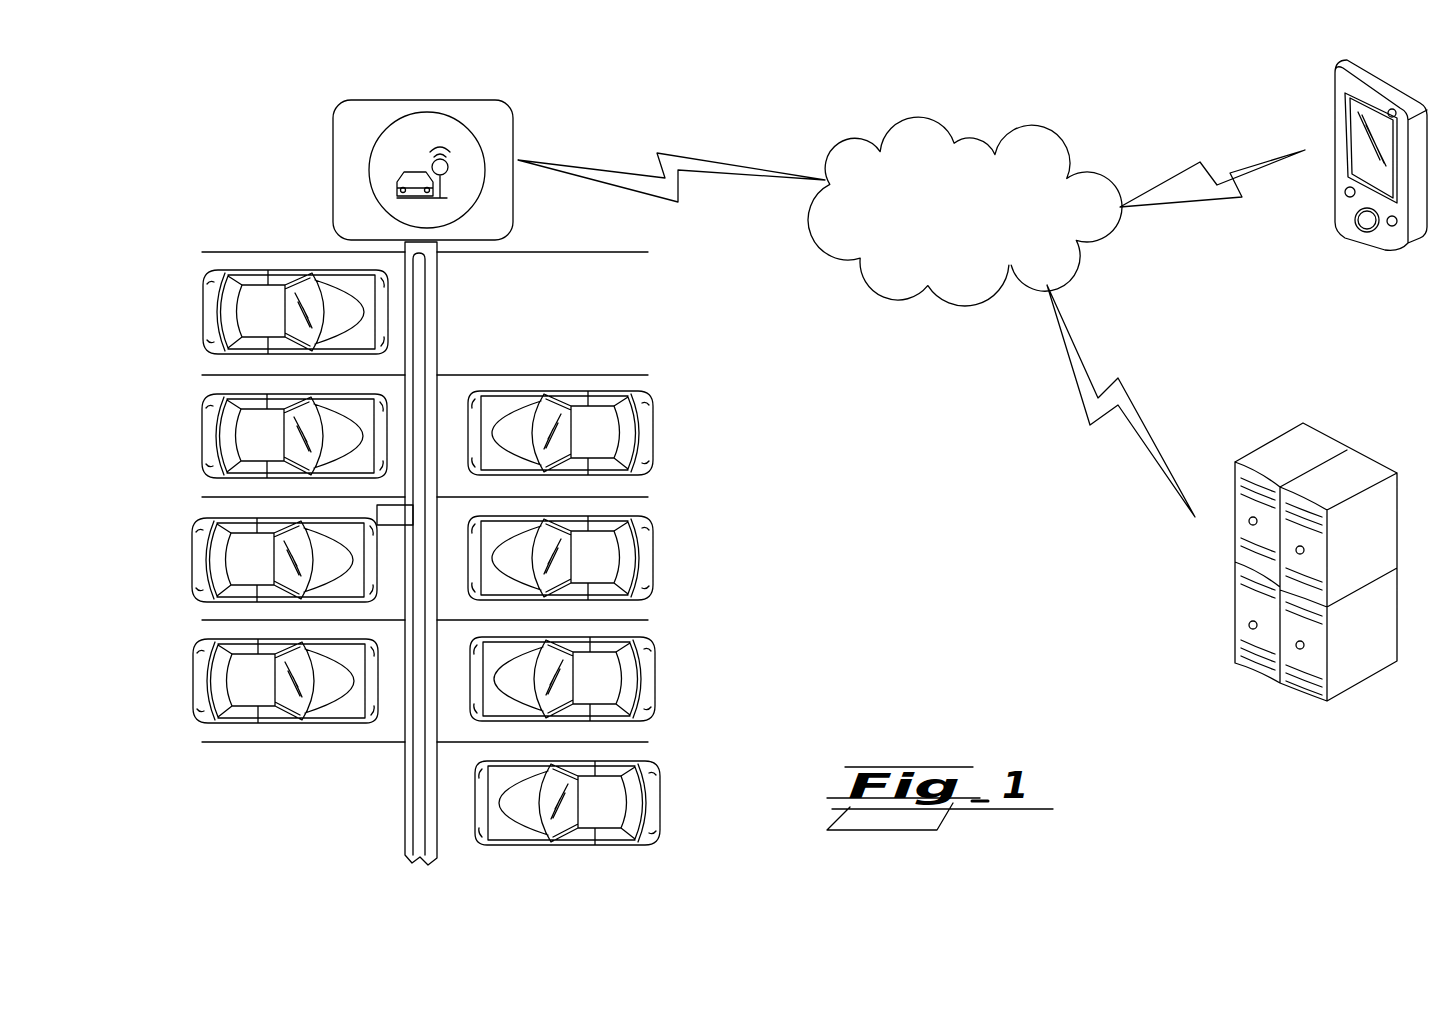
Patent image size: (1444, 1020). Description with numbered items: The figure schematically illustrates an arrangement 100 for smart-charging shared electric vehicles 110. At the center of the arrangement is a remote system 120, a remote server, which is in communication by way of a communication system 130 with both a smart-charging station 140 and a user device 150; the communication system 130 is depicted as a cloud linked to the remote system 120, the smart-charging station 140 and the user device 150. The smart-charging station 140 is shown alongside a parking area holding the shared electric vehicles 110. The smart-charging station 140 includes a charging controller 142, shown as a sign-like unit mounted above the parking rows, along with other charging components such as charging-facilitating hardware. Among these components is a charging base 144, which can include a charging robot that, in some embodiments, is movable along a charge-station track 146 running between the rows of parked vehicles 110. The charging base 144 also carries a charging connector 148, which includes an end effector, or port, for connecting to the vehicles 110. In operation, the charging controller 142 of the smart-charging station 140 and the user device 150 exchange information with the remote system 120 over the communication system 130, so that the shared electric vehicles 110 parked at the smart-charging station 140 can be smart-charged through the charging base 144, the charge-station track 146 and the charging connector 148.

The arrangement 100 is at (1088, 692).
The shared electric vehicles 110 is at (652, 412).
The remote system 120 is at (1203, 560).
The communication system 130 is at (1003, 225).
The smart-charging station 140 is at (713, 563).
The charging controller 142 is at (332, 180).
The charging base 144 is at (333, 420).
The charge-station track 146 is at (437, 312).
The charging connector 148 is at (377, 512).
The user device 150 is at (1357, 282).